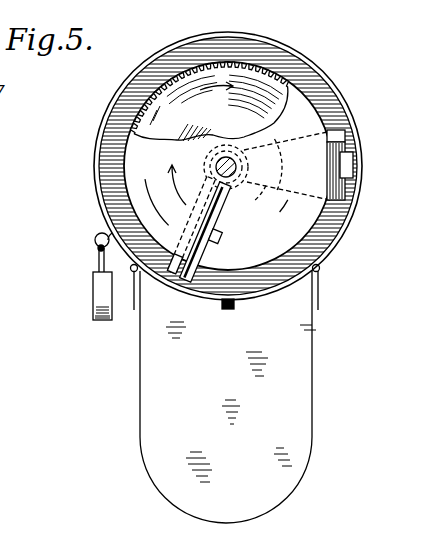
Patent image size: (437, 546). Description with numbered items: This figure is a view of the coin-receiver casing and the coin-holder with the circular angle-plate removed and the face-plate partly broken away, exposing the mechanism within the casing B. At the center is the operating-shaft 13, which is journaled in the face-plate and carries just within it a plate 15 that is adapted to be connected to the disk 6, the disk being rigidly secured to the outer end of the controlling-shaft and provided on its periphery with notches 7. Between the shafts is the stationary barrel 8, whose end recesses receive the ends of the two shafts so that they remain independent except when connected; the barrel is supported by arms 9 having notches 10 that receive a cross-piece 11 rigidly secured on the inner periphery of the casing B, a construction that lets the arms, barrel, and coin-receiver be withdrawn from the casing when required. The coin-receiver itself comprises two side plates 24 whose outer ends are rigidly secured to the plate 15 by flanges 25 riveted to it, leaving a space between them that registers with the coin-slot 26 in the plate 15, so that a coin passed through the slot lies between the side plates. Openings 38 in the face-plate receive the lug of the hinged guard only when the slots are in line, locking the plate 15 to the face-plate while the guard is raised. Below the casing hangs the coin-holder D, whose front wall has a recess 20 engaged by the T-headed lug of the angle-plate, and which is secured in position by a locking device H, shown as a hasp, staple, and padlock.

The casing B is at (337, 86).
The notches 7 is at (274, 75).
The disk 6 is at (192, 98).
The arms 9 is at (340, 136).
The notches 10 is at (347, 188).
The cross-piece 11 is at (354, 163).
The operating-shaft 13 is at (238, 167).
The plate 15 is at (269, 181).
The barrel 8 is at (180, 183).
The coin-slot 26 is at (203, 222).
The flanges 25 is at (172, 265).
The side plates 24 is at (182, 274).
The openings 38 is at (222, 236).
The recess 20 is at (226, 310).
The coin-holder D is at (225, 394).
The locking device H is at (84, 276).